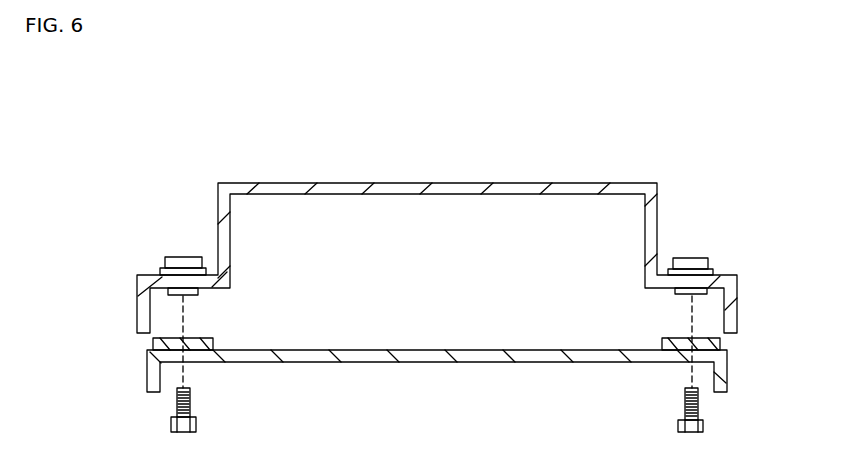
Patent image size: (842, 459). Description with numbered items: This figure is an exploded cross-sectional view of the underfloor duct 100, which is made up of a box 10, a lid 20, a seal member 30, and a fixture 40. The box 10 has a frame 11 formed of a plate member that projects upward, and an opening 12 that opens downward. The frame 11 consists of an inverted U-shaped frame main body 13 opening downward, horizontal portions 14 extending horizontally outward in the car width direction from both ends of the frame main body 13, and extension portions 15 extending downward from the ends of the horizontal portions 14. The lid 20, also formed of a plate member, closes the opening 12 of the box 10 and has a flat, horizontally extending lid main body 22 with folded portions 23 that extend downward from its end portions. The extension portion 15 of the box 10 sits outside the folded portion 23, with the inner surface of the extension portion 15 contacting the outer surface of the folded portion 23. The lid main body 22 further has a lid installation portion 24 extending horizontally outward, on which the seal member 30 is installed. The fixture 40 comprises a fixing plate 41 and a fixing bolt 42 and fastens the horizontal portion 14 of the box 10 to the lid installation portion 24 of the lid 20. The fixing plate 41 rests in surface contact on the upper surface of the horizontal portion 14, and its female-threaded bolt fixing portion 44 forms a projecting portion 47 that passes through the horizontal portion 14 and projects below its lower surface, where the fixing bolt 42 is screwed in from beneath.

The underfloor duct 100 is at (512, 152).
The box 10 is at (461, 227).
The frame 11 is at (285, 192).
The opening 12 is at (409, 300).
The frame main body 13 is at (649, 200).
The horizontal portion 14 is at (712, 282).
The extension portion 15 is at (735, 302).
The lid 20 is at (460, 392).
The lid main body 22 is at (528, 358).
The folded portion 23 is at (722, 376).
The lid installation portion 24 is at (675, 357).
The seal member 30 is at (680, 341).
The fixture 40 is at (694, 316).
The fixing plate 41 is at (699, 260).
The fixing bolt 42 is at (700, 410).
The bolt fixing portion 44 is at (679, 292).
The projecting portion 47 is at (699, 296).